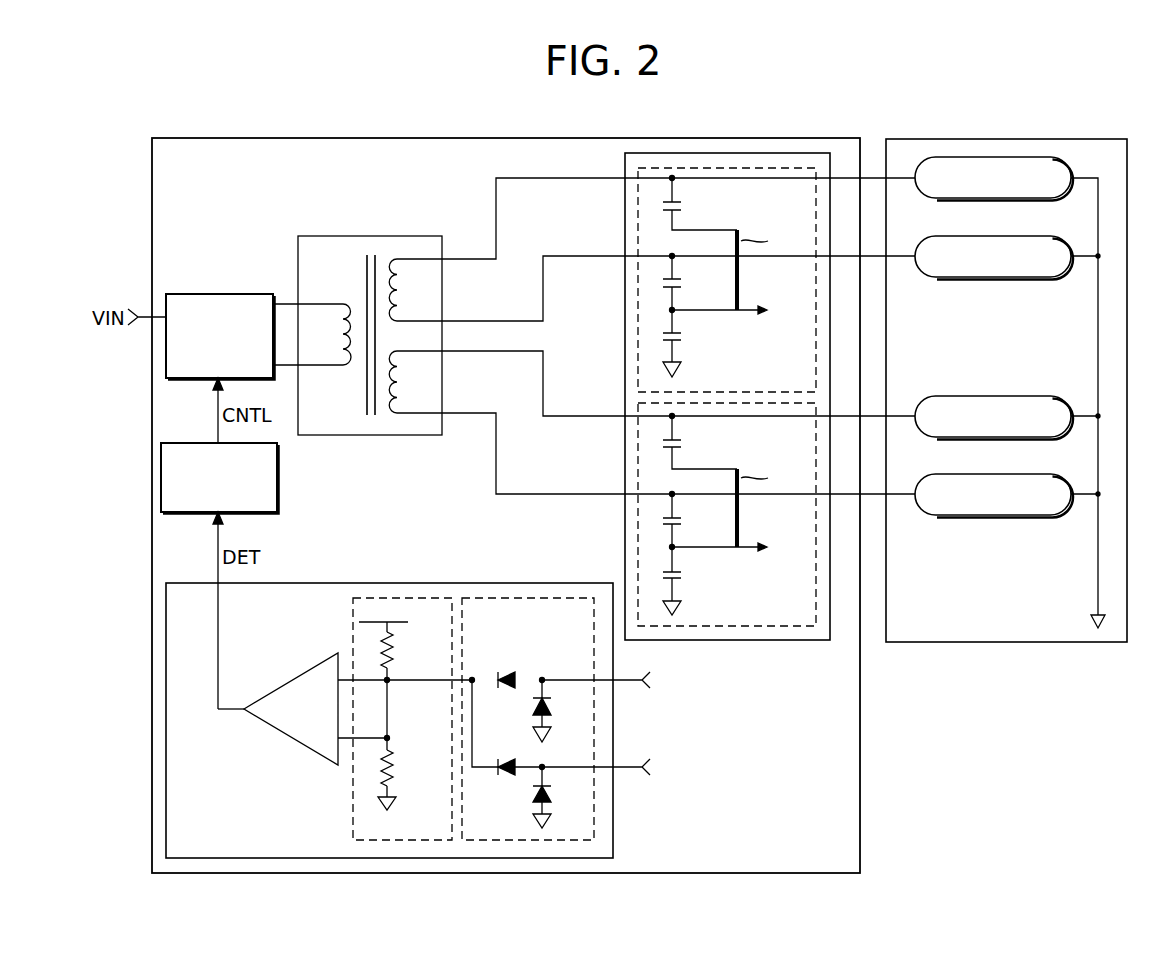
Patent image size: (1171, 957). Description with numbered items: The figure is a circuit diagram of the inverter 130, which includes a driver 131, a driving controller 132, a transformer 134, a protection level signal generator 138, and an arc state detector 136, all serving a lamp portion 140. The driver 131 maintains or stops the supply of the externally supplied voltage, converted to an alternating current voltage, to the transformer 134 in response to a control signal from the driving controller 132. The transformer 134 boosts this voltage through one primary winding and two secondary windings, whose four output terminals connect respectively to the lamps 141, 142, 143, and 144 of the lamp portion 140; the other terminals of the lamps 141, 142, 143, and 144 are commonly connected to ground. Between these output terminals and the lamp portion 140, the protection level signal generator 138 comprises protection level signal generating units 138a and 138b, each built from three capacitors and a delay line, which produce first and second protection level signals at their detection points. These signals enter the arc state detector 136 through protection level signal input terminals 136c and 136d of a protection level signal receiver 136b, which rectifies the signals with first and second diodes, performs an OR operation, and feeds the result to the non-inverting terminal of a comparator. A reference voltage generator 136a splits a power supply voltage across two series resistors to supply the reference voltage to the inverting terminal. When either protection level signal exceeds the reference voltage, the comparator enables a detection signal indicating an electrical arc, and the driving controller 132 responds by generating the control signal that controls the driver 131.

The inverter 130 is at (503, 138).
The driver 131 is at (166, 357).
The driving controller 132 is at (161, 477).
The transformer 134 is at (298, 260).
The arc state detector 136 is at (166, 727).
The reference voltage generator 136a is at (388, 598).
The protection level signal receiver 136b is at (531, 598).
The protection level signal input terminal 136c is at (626, 683).
The protection level signal input terminal 136d is at (626, 770).
The protection level signal generator 138 is at (733, 153).
The protection level signal generating unit 138a is at (638, 216).
The protection level signal generating unit 138b is at (638, 462).
The lamp portion 140 is at (1005, 139).
The lamp 141 is at (992, 198).
The lamp 142 is at (992, 277).
The lamp 143 is at (992, 437).
The lamp 144 is at (992, 515).